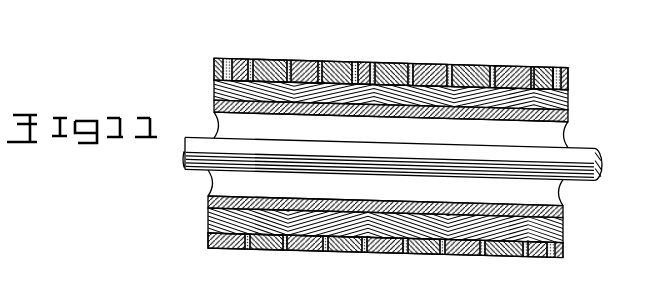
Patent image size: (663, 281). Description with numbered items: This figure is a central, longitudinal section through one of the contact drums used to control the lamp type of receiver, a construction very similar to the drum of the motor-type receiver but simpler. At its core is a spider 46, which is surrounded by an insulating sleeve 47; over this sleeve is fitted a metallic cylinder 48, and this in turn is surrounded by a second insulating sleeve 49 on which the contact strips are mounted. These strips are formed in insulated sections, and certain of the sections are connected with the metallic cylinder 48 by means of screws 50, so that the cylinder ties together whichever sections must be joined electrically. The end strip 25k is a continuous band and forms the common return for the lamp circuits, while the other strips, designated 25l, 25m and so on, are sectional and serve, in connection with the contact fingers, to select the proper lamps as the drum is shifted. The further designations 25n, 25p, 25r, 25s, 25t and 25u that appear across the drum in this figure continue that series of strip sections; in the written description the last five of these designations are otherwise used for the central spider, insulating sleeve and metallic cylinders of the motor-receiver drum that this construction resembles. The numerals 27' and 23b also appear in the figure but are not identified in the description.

The shaft 27' is at (415, 154).
The spider 46 is at (232, 117).
The insulating sleeve 47 is at (215, 91).
The metallic cylinder 48 is at (223, 77).
The insulating sleeve 49 is at (569, 83).
The screws 50 is at (355, 59).
The cylinder of insulating material 25u is at (243, 59).
The sleeve of insulating material 25t is at (277, 59).
The central metallic spider 25s is at (307, 59).
The cylinder of metal 25r is at (333, 53).
The second metallic cylinder 25p is at (395, 64).
The lining segment 25n is at (428, 64).
The contact strip 25m is at (480, 66).
The contact strip 25l is at (514, 62).
The end strip 25k is at (543, 67).
The segment 23b is at (528, 7).